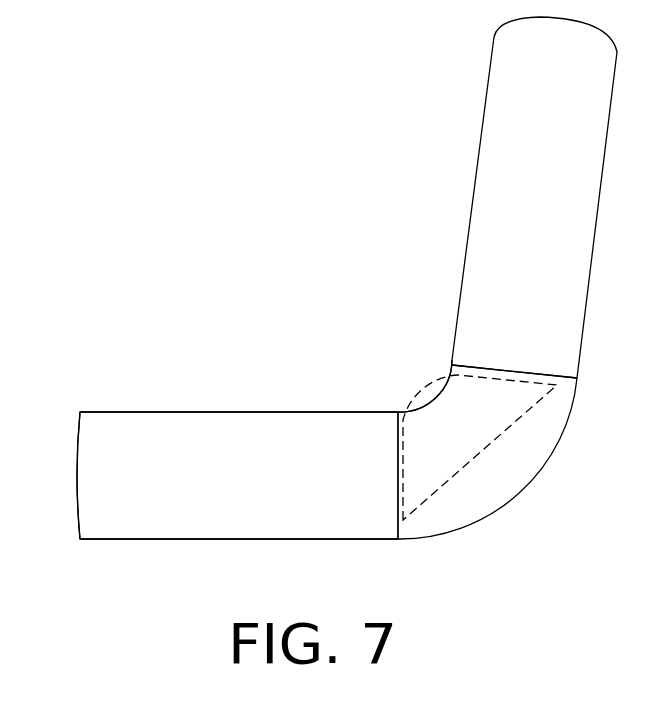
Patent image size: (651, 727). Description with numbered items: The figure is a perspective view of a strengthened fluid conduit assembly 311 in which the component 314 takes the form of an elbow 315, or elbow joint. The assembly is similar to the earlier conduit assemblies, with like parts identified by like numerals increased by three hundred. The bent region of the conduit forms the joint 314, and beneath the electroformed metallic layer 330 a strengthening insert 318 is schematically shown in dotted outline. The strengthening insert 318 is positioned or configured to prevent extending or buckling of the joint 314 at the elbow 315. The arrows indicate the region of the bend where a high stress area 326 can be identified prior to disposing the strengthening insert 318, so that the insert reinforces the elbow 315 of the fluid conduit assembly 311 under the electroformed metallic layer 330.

The fluid conduit assembly 311 is at (247, 289).
The component 314 is at (398, 370).
The elbow 315 is at (388, 392).
The strengthening insert 318 is at (468, 467).
The high stress area 326 is at (422, 362).
The electroformed metallic layer 330 is at (233, 440).